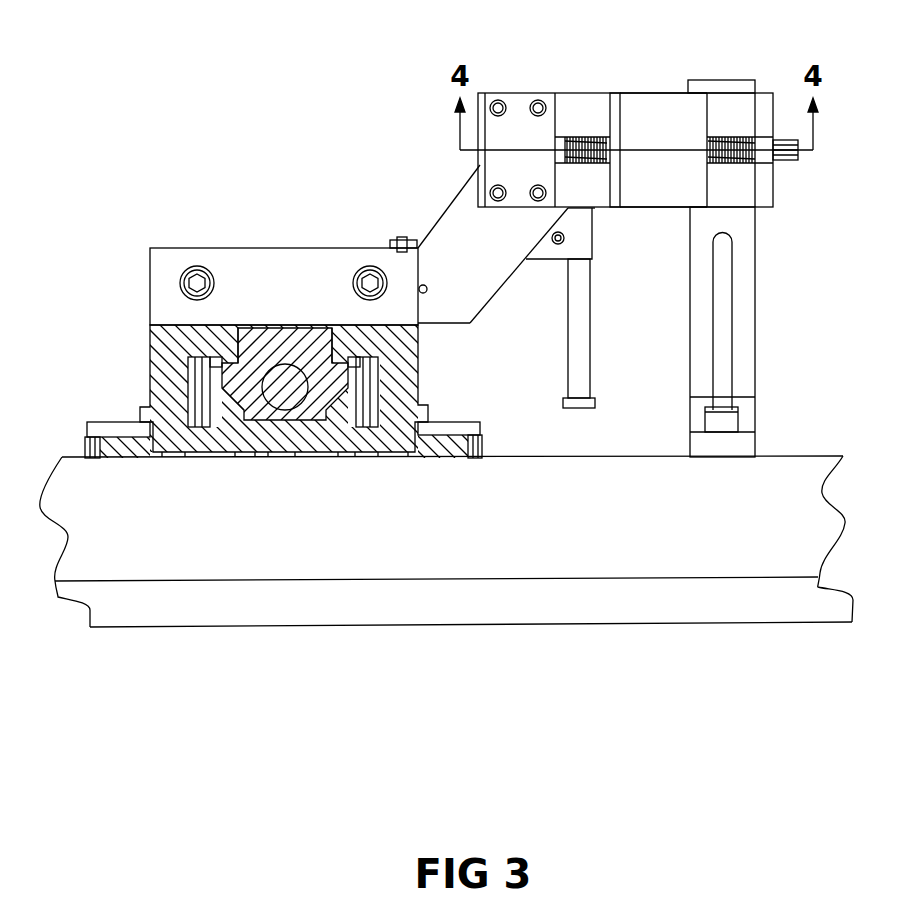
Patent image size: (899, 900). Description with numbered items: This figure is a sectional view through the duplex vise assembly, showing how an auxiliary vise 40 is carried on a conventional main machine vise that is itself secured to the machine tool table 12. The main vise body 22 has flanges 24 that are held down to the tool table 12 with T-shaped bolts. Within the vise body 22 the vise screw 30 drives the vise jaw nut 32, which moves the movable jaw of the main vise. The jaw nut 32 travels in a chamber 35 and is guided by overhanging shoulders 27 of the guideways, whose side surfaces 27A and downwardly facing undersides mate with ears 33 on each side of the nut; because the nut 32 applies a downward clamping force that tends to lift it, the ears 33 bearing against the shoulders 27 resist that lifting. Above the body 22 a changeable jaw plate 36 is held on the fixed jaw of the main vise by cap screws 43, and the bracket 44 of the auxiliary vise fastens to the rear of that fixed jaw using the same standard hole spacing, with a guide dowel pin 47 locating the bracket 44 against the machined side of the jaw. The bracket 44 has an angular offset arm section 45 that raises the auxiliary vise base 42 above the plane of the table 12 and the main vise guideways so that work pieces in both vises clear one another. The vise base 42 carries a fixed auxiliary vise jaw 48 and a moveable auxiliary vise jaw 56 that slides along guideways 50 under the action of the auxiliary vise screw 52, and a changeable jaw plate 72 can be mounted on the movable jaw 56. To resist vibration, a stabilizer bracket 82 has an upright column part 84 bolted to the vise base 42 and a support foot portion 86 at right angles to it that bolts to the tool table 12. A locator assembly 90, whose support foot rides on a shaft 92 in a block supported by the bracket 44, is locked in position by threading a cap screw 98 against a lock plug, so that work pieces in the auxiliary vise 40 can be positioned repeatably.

The machine tool table 12 is at (453, 567).
The vise body 22 is at (155, 350).
The flanges 24 is at (113, 423).
The overhanging shoulders 27 is at (238, 370).
The side surfaces 27A is at (262, 308).
The vise screw 30 is at (285, 393).
The vise jaw nut 32 is at (317, 362).
The ears 33 is at (225, 387).
The chamber 35 is at (233, 413).
The changeable jaw plate 36 is at (283, 272).
The auxiliary vise 40 is at (447, 131).
The vise base 42 is at (597, 93).
The cap screws 43 is at (181, 266).
The bracket 44 is at (442, 232).
The angular offset arm section 45 is at (460, 278).
The guide dowel pin 47 is at (424, 294).
The fixed auxiliary vise jaw 48 is at (517, 102).
The guideways 50 is at (575, 113).
The auxiliary vise screw 52 is at (728, 142).
The moveable auxiliary vise jaw 56 is at (653, 108).
The changeable jaw plate 72 is at (612, 163).
The stabilizer bracket 82 is at (758, 317).
The upright column part 84 is at (752, 242).
The support foot portion 86 is at (748, 445).
The locator assembly 90 is at (590, 348).
The shaft 92 is at (567, 277).
The cap screw 98 is at (566, 240).